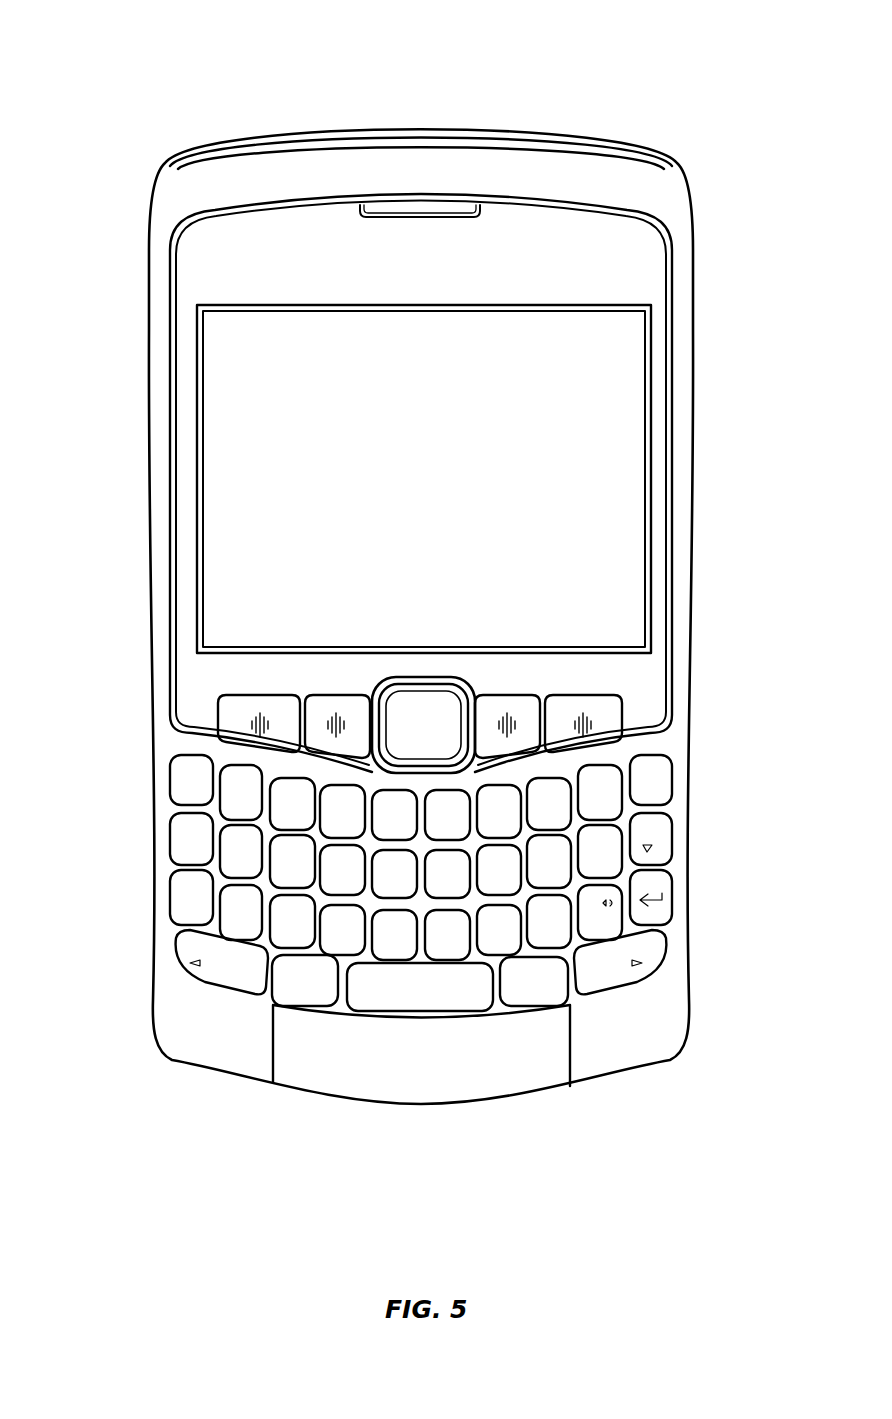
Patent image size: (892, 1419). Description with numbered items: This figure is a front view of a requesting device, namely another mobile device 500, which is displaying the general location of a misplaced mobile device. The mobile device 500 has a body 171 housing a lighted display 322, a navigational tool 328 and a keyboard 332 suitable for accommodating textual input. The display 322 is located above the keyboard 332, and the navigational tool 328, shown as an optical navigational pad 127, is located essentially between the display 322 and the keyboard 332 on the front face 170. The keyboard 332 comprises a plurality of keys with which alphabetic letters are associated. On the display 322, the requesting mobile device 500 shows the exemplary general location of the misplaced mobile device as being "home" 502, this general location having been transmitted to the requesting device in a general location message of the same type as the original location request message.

The mobile device 500 is at (462, 48).
The body 171 is at (148, 243).
The front face 170 is at (680, 223).
The home 502 is at (453, 458).
The lighted display 322 is at (217, 615).
The navigational tool 328 is at (398, 682).
The optical navigational pad 127 is at (427, 717).
The keyboard 332 is at (680, 938).